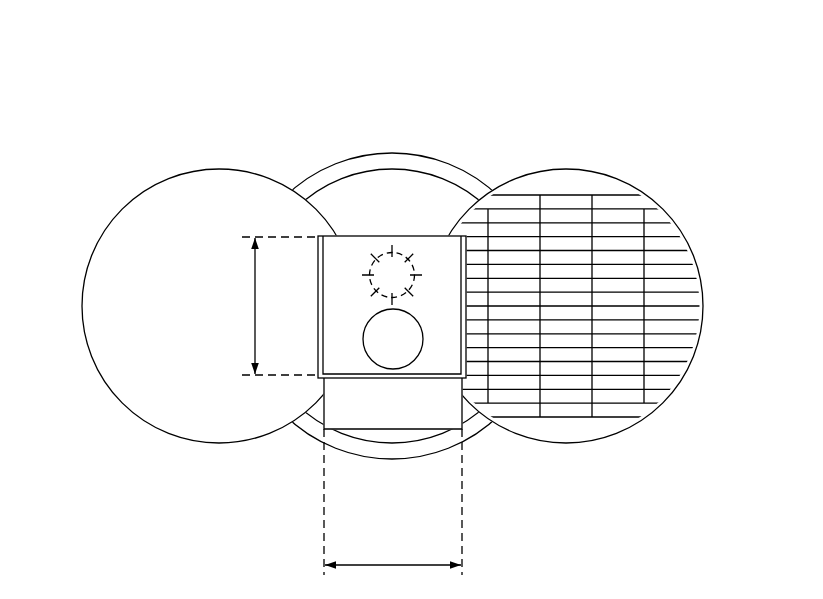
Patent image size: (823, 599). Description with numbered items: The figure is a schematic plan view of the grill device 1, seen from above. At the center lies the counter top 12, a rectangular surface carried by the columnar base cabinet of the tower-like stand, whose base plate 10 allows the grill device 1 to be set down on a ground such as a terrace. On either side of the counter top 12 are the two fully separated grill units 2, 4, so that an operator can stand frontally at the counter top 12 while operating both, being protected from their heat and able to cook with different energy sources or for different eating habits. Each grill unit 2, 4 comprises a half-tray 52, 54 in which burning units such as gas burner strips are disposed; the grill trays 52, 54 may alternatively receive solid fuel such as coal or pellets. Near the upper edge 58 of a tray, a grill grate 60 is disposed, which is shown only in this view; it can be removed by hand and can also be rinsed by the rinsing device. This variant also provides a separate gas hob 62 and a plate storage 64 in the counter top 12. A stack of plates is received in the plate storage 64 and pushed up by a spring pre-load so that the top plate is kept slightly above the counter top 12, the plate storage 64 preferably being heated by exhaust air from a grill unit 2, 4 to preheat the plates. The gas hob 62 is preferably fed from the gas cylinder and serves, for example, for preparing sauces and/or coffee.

The grill device 1 is at (552, 102).
The grill unit 2 is at (203, 168).
The grill unit 4 is at (608, 170).
The base plate 10 is at (338, 162).
The counter top 12 is at (388, 236).
The half-tray 52 is at (132, 200).
The half-tray 54 is at (677, 220).
The upper edge 58 is at (670, 278).
The grill grate 60 is at (612, 248).
The gas hob 62 is at (422, 258).
The plate storage 64 is at (393, 347).